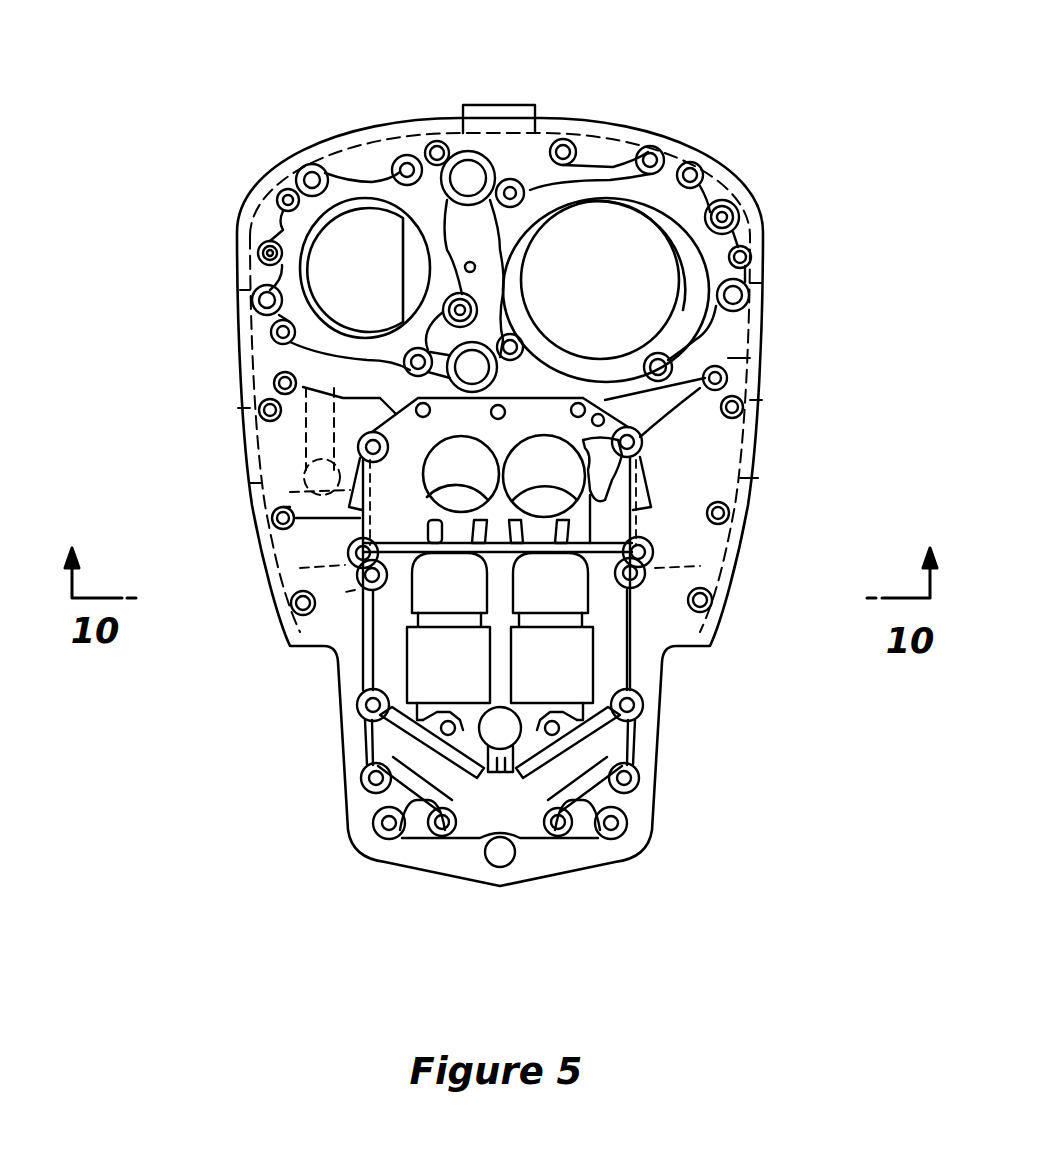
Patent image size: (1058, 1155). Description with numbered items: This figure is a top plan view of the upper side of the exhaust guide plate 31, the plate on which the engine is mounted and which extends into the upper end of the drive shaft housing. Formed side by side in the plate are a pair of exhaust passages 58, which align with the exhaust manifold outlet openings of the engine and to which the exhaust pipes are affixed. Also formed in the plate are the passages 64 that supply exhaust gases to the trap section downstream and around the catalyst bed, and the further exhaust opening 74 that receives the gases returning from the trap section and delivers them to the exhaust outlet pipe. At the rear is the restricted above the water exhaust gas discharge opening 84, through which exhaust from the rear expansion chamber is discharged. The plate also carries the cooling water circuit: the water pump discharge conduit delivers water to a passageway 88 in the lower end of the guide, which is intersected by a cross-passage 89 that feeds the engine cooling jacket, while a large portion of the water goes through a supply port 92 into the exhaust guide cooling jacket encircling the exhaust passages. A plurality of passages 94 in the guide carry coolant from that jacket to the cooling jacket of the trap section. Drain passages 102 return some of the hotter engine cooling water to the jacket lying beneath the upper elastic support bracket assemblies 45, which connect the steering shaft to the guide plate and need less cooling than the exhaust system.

The exhaust guide plate 31 is at (292, 152).
The above the water exhaust gas discharge opening 84 is at (491, 104).
The passages 94 is at (724, 215).
The exhaust opening 74 is at (360, 336).
The passages 64 is at (603, 357).
The supply port 92 is at (323, 436).
The passageway 88 is at (362, 462).
The cross-passage 89 is at (278, 514).
The exhaust passages 58 is at (558, 463).
The drain passages 102 is at (370, 578).
The upper elastic support bracket assemblies 45 is at (432, 671).